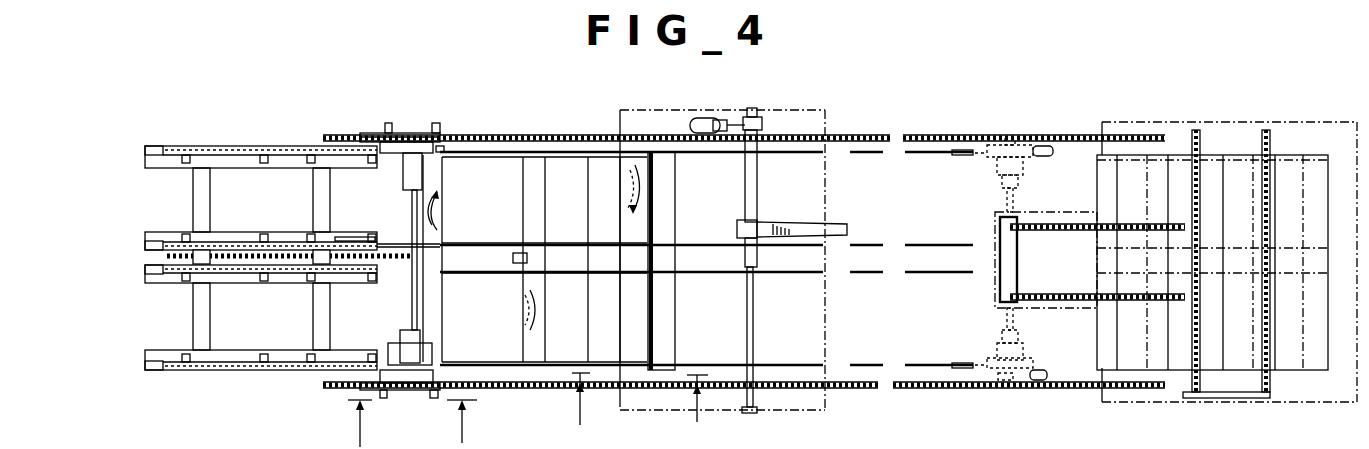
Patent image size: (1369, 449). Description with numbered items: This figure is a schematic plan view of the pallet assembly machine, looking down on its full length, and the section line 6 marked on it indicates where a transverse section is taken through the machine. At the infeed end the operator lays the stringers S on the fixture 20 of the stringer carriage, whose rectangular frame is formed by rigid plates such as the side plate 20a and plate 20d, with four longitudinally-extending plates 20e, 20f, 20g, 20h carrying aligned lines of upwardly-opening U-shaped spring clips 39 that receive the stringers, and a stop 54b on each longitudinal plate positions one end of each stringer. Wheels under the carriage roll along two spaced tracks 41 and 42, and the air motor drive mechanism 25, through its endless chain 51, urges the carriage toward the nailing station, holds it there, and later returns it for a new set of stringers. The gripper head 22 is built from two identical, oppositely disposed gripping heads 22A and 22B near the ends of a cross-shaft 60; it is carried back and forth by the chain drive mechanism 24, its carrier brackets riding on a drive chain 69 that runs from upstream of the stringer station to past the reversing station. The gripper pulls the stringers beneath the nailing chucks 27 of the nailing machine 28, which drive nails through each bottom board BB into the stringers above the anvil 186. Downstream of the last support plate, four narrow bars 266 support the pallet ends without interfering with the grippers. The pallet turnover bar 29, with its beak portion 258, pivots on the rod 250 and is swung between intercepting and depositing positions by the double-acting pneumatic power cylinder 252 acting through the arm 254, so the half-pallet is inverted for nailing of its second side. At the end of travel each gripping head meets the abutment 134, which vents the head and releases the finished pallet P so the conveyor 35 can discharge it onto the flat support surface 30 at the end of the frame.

The fixture 20 is at (261, 222).
The side plate 20a is at (213, 300).
The rigid plate 20d is at (312, 325).
The longitudinal plate 20e is at (170, 167).
The longitudinal plate 20f is at (167, 227).
The longitudinal plate 20g is at (170, 283).
The longitudinal plate 20h is at (167, 350).
The stop 54b is at (155, 147).
The stringer S is at (225, 150).
The spring clip 39 is at (308, 148).
The endless chain 51 is at (352, 225).
The air motor drive mechanism 25 is at (386, 248).
The gripper head 22 is at (407, 124).
The gripping head 22A is at (438, 148).
The gripping head 22B is at (417, 337).
The chain drive mechanism 24 is at (515, 133).
The drive chain 69 is at (913, 129).
The narrow bar 266 is at (917, 158).
The bottom board BB is at (527, 200).
The anvil 186 is at (667, 206).
The cross-shaft 60 is at (413, 232).
The track 41 is at (568, 160).
The track 42 is at (562, 360).
The nailing machine 28 is at (673, 413).
The arm 254 is at (736, 123).
The double-acting pneumatic power cylinder 252 is at (710, 118).
The rod 250 is at (745, 170).
The beak portion 258 is at (847, 228).
The pallet turnover bar 29 is at (846, 224).
The section line 6 is at (640, 411).
The abutment 134 is at (1050, 156).
The conveyor 35 is at (1030, 224).
The flat support surface 30 is at (1227, 238).
The pallet P is at (1210, 153).
The nailing chuck 27 is at (1315, 440).